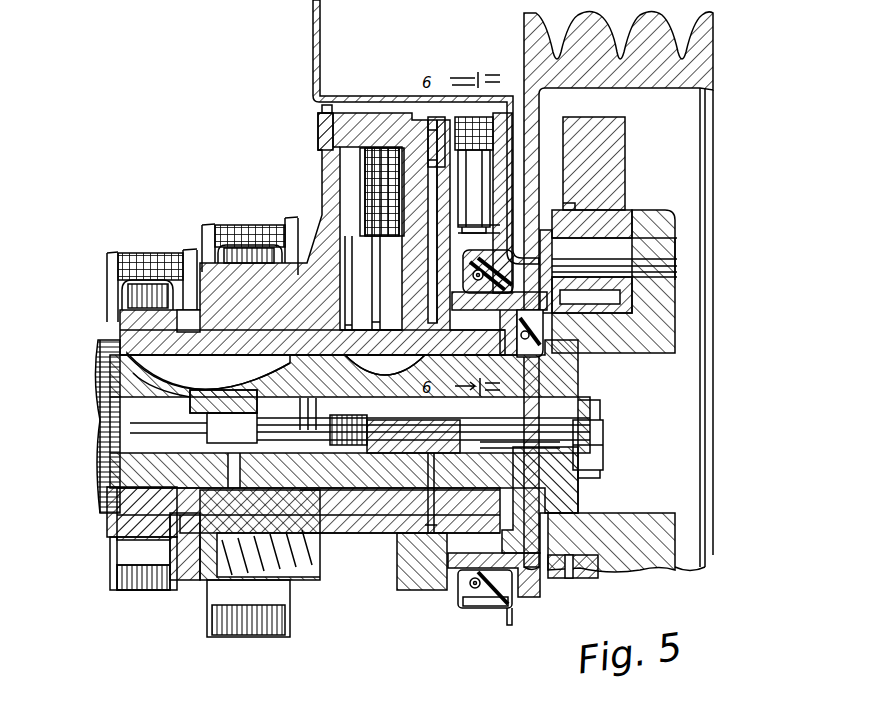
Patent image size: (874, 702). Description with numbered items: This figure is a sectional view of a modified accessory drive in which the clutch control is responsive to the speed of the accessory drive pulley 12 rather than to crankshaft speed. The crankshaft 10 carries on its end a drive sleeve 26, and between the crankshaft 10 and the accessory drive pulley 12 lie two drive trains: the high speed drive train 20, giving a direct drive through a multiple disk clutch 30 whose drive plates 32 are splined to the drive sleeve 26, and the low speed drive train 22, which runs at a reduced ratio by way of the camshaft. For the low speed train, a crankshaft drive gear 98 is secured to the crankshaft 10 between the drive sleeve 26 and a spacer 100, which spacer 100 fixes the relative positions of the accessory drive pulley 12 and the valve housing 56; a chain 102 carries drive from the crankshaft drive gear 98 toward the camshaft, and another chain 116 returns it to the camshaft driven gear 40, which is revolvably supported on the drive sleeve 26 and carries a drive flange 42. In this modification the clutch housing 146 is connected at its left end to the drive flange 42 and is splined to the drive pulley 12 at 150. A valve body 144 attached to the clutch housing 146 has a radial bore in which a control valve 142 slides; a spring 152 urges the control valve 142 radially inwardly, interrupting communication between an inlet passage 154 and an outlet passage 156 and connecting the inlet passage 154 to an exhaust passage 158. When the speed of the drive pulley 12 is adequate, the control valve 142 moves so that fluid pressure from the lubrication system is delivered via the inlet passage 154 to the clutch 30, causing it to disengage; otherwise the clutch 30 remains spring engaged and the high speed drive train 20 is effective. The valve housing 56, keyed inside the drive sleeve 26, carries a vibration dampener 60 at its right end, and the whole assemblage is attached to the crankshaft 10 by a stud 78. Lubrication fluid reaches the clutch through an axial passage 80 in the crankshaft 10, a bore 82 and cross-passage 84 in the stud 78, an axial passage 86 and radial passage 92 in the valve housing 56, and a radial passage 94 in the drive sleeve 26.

The crankshaft 10 is at (100, 402).
The accessory drive pulley 12 is at (706, 60).
The high speed drive train 20 is at (373, 325).
The low speed drive train 22 is at (125, 592).
The drive sleeve 26 is at (512, 505).
The multiple disk clutch 30 is at (330, 195).
The drive plates 32 is at (385, 284).
The camshaft driven gear 40 is at (225, 248).
The drive flange 42 is at (318, 140).
The valve housing 56 is at (677, 305).
The vibration dampener 60 is at (612, 182).
The stud 78 is at (603, 433).
The axial passage 80 is at (195, 393).
The bore 82 is at (265, 398).
The cross-passage 84 is at (420, 428).
The axial passage 86 is at (498, 405).
The radial passage 92 is at (436, 478).
The radial passage 94 is at (436, 512).
The crankshaft drive gear 98 is at (122, 300).
The spacer 100 is at (515, 482).
The chain 102 is at (140, 592).
The chain 116 is at (238, 637).
The control valve 142 is at (433, 117).
The valve body 144 is at (455, 117).
The clutch housing 146 is at (372, 113).
The spline 150 is at (512, 350).
The spring 152 is at (508, 115).
The inlet passage 154 is at (368, 178).
The outlet passage 156 is at (373, 230).
The exhaust passage 158 is at (498, 220).